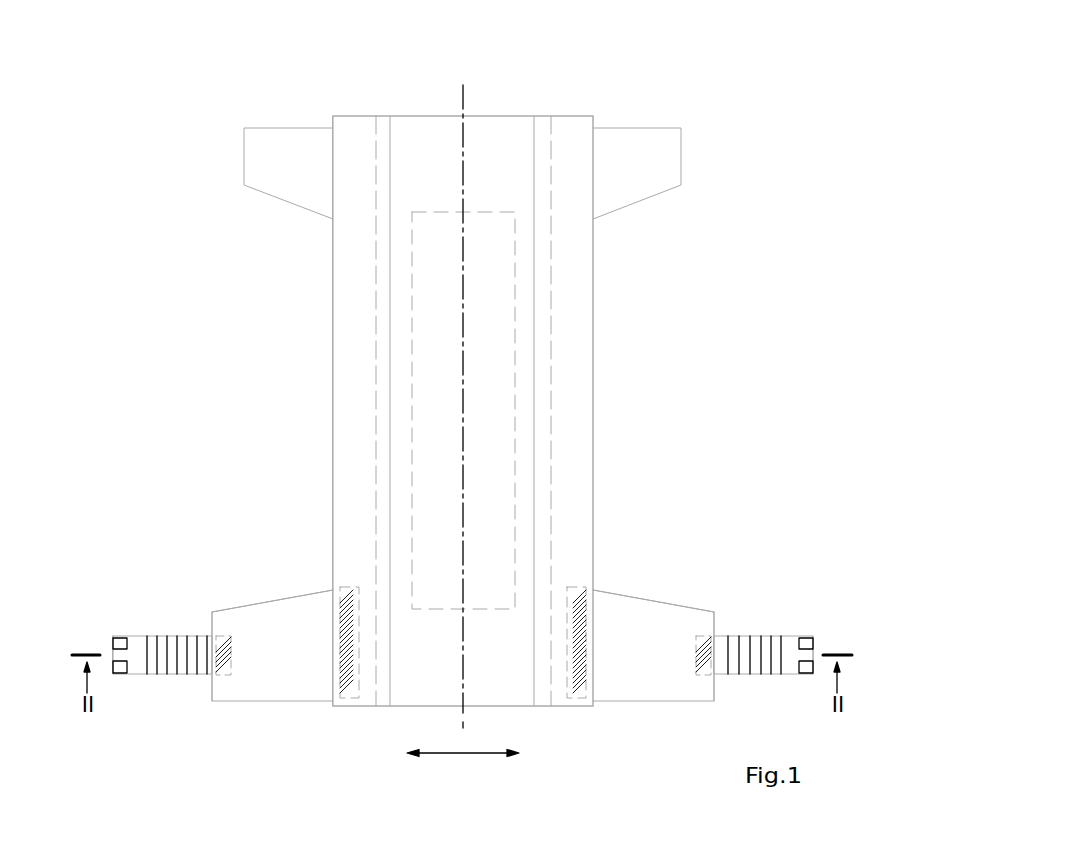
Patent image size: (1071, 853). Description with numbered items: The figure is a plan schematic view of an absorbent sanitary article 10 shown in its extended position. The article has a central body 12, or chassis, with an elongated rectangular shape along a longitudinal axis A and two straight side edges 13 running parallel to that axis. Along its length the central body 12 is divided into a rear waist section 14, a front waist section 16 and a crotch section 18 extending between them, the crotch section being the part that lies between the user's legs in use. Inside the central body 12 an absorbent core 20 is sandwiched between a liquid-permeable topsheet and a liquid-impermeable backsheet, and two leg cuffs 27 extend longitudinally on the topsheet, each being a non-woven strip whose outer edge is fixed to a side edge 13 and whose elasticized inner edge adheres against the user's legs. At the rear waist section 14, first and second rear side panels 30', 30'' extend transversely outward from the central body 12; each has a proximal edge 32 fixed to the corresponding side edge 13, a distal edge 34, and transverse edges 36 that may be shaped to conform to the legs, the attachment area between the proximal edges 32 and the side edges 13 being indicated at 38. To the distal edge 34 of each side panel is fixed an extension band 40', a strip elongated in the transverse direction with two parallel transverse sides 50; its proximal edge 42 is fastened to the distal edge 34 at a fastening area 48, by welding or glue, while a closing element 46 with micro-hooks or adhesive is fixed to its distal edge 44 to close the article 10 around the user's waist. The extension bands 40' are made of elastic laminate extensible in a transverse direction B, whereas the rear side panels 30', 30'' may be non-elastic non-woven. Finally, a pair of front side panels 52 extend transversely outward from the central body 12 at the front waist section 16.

The absorbent sanitary article 10 is at (550, 359).
The central body 12 is at (620, 309).
The side edges 13 is at (333, 362).
The rear waist section 14 is at (423, 683).
The front waist section 16 is at (493, 128).
The crotch section 18 is at (425, 443).
The absorbent core 20 is at (511, 265).
The leg cuffs 27 is at (353, 402).
The first rear side panel 30' is at (272, 668).
The second rear side panel 30'' is at (652, 676).
The proximal edges 32 is at (355, 700).
The distal edges 34 is at (212, 612).
The transverse edges 36 is at (280, 598).
The attachment area 38 is at (343, 598).
The first extension band 40' is at (463, 608).
The proximal edge 42 is at (220, 677).
The distal edge 44 is at (113, 638).
The closing element 46 is at (118, 665).
The fastening areas 48 is at (222, 657).
The transverse sides 50 is at (175, 636).
The front side panels 52 is at (278, 150).
The longitudinal axis A is at (463, 713).
The transverse direction B is at (465, 755).